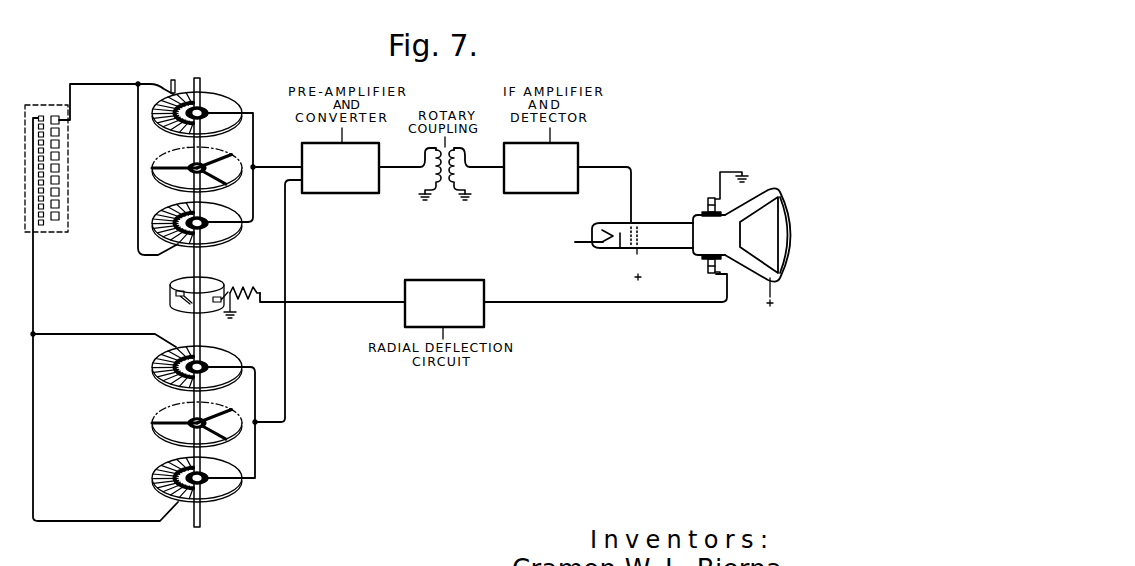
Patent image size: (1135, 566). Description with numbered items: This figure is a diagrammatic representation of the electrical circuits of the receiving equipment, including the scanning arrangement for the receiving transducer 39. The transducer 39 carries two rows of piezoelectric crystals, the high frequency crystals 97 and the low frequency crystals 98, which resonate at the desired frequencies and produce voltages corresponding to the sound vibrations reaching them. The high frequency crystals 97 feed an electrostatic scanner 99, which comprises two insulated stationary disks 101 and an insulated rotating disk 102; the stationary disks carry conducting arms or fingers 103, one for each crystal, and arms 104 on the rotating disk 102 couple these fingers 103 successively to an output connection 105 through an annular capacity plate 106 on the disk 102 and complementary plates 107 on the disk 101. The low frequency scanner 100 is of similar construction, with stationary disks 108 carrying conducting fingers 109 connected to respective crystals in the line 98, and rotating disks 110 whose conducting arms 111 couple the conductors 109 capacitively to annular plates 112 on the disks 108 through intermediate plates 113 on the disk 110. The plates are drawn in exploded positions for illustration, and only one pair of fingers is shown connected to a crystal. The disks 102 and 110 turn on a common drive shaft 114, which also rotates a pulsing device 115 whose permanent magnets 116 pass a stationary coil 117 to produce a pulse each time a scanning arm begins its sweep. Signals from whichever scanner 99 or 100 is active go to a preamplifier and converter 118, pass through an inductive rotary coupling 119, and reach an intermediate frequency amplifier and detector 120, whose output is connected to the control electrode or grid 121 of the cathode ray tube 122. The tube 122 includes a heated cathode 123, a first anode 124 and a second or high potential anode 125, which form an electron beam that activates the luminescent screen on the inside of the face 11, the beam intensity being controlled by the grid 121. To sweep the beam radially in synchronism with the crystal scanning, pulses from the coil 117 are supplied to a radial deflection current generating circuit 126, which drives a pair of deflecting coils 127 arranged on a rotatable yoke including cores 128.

The face of the tube 11 is at (699, 239).
The receiving transducer 39 is at (68, 160).
The high frequency crystals 97 is at (41, 116).
The low frequency crystals 98 is at (56, 115).
The electrostatic scanner 99 is at (190, 422).
The electrostatic scanner 100 is at (189, 161).
The stationary disks 101 is at (226, 490).
The rotating disk 102 is at (172, 433).
The conducting arms or fingers 103 is at (160, 361).
The arms 104 is at (172, 418).
The output connection 105 is at (262, 432).
The annular capacity plate 106 is at (226, 411).
The complementary plates 107 is at (212, 364).
The stationary disks 108 is at (221, 99).
The conducting fingers 109 is at (128, 226).
The rotating disks 110 is at (171, 180).
The conducting arms 111 is at (170, 166).
The annular plates 112 is at (210, 112).
The intermediate plates 113 is at (226, 162).
The common drive shaft 114 is at (190, 517).
The pulsing device 115 is at (182, 283).
The permanent magnets 116 is at (184, 305).
The stationary coil 117 is at (257, 292).
The preamplifier and converter 118 is at (348, 187).
The inductive rotary coupling 119 is at (445, 178).
The intermediate frequency amplifier and detector 120 is at (537, 186).
The control electrode or grid 121 is at (630, 228).
The cathode ray electron discharge device or tube 122 is at (661, 223).
The heated cathode 123 is at (614, 248).
The first anode 124 is at (637, 254).
The second or high potential anode 125 is at (765, 277).
The radial deflection current generating circuit 126 is at (444, 283).
The deflecting coils 127 is at (708, 204).
The cores 128 is at (722, 212).